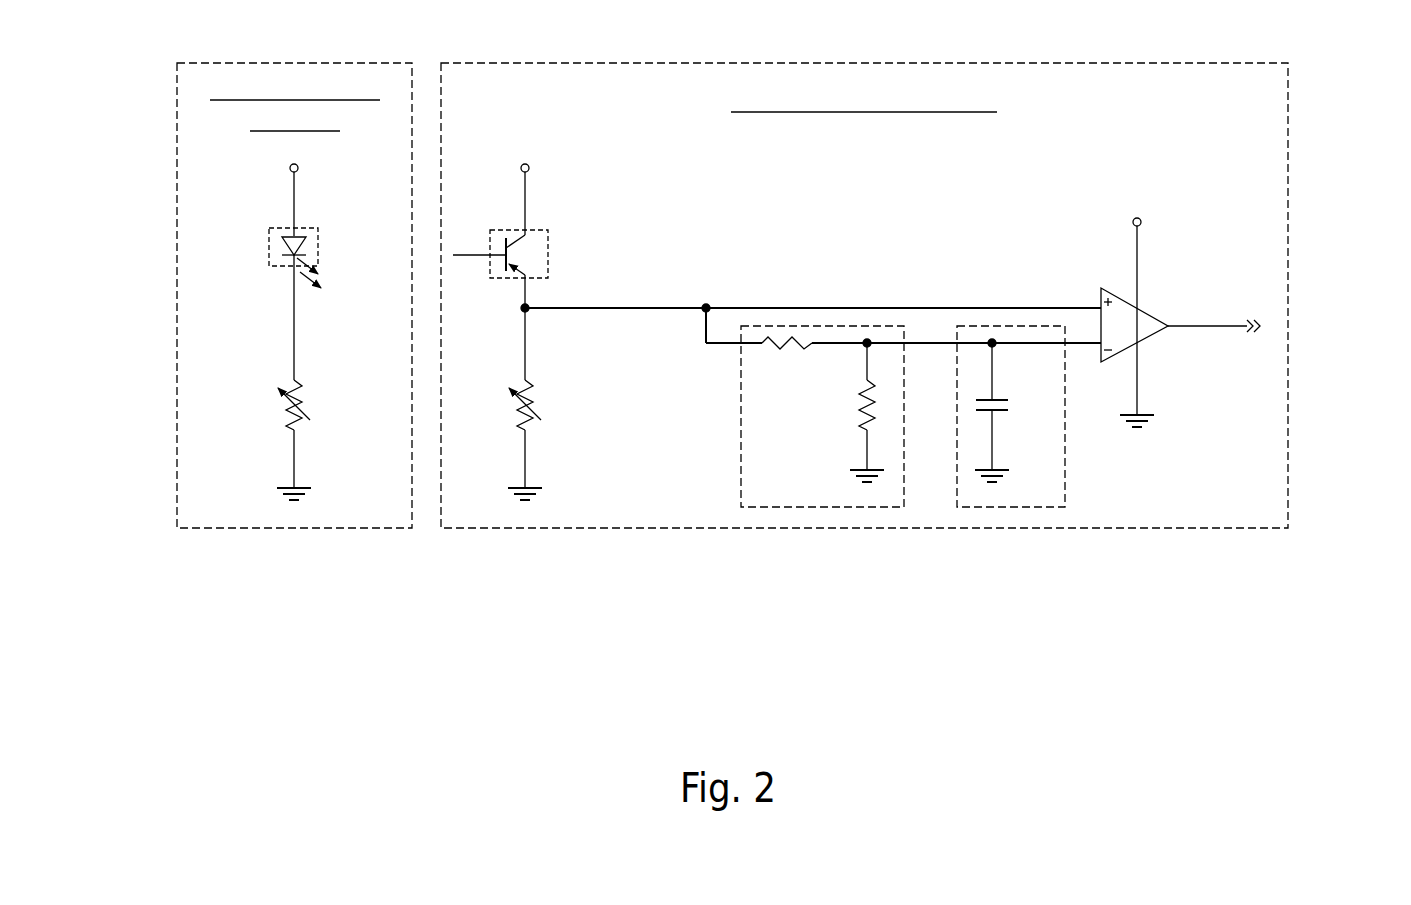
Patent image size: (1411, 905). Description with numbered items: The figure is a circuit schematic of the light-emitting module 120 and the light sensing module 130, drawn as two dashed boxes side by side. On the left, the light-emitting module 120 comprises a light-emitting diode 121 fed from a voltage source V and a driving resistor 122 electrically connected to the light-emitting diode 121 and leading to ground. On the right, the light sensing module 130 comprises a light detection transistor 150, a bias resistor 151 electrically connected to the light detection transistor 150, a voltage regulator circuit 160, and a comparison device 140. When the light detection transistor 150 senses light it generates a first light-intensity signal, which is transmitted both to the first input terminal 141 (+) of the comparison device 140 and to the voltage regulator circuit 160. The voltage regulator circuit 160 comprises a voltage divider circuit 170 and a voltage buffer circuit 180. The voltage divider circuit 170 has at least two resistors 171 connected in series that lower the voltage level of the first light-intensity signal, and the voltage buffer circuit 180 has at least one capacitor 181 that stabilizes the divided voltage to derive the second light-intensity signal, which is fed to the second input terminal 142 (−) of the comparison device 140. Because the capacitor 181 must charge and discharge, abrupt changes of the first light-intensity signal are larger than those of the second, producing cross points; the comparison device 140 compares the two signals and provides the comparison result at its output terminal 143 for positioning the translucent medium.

The light-emitting module 120 is at (196, 192).
The light-emitting diode 121 is at (268, 246).
The driving resistor 122 is at (290, 424).
The light sensing module 130 is at (1272, 140).
The comparison device 140 is at (1125, 305).
The first input terminal 141 is at (1100, 290).
The second input terminal 142 is at (1106, 362).
The output terminal 143 is at (1170, 330).
The light detection transistor 150 is at (550, 255).
The bias resistor 151 is at (533, 393).
The voltage regulator circuit 160 is at (1043, 595).
The voltage divider circuit 170 is at (845, 507).
The resistors 171 is at (862, 428).
The voltage buffer circuit 180 is at (1012, 507).
The capacitor 181 is at (997, 413).